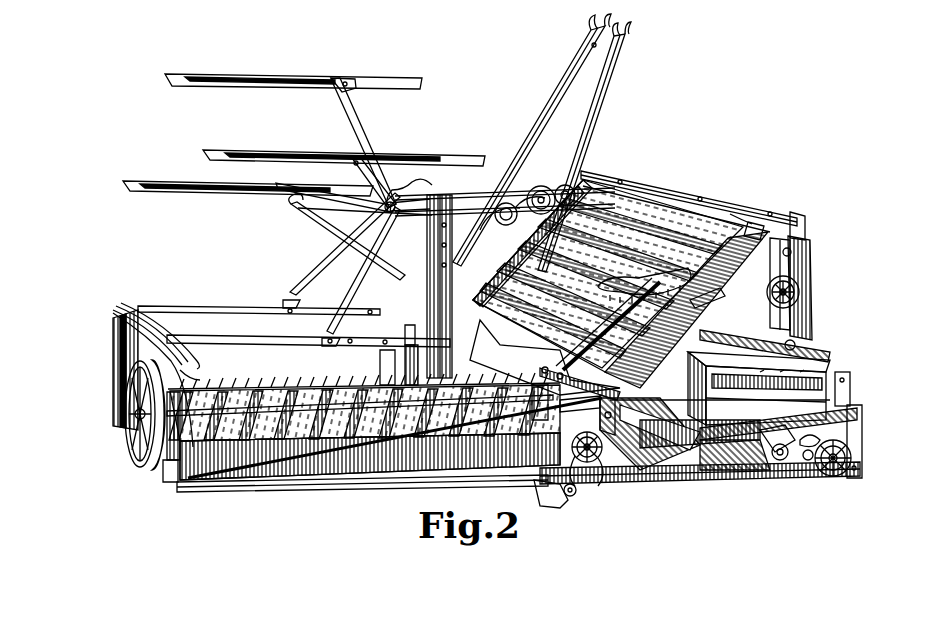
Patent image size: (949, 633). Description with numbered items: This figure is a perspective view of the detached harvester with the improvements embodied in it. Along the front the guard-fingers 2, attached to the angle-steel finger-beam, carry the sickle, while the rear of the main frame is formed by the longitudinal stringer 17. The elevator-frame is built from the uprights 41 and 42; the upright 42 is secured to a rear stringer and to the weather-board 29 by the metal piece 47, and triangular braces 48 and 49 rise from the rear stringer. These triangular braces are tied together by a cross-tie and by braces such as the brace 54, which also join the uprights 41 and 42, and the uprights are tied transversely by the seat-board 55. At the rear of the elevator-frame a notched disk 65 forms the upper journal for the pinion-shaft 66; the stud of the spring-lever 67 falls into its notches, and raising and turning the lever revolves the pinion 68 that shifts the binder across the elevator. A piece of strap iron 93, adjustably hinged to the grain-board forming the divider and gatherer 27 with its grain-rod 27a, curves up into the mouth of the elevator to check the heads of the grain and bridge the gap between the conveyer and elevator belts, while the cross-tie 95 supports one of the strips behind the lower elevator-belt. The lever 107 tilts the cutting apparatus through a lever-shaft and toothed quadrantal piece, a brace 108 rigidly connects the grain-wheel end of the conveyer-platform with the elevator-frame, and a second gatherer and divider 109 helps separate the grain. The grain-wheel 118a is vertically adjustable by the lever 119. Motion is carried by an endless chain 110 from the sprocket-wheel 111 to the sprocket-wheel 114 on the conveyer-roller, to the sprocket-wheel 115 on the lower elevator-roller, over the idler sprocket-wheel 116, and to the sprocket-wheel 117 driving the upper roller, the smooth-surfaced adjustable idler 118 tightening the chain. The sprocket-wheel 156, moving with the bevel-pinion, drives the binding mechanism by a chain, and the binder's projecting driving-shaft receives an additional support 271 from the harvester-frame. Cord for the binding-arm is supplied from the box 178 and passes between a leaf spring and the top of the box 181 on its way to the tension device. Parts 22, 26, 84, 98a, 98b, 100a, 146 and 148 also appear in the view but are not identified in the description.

The guard-fingers 2 is at (364, 376).
The longitudinal stringer 17 is at (355, 476).
The slatted platform 22 is at (364, 413).
The side wall 26 is at (141, 416).
The divider and gatherer 27 is at (149, 367).
The grain-rod 27a is at (193, 371).
The weather-board 29 is at (370, 456).
The upright 41 is at (453, 196).
The upright 42 is at (424, 378).
The metal piece 47 is at (698, 461).
The triangular brace 48 is at (795, 253).
The triangular brace 49 is at (785, 347).
The brace 54 is at (689, 201).
The seat-board 55 is at (545, 357).
The notched disk 65 is at (766, 228).
The pinion-shaft 66 is at (800, 268).
The spring-lever 67 is at (747, 224).
The pinion 68 is at (762, 346).
The elevator conveyor 84 is at (608, 276).
The strap iron 93 is at (232, 387).
The cross-tie 95 is at (555, 499).
The lower bar 98a is at (385, 312).
The bracket 98b is at (400, 365).
The bracket 100a is at (380, 388).
The lever 107 is at (542, 143).
The brace 108 is at (360, 423).
The gatherer and divider 109 is at (410, 342).
The endless chain 110 is at (686, 367).
The sprocket-wheel 111 is at (820, 478).
The sprocket-wheel 114 is at (578, 506).
The sprocket-wheel 115 is at (607, 482).
The idler sprocket-wheel 116 is at (662, 478).
The sprocket-wheel 117 is at (802, 276).
The adjustable idler 118 is at (781, 478).
The grain-wheel 118a is at (145, 421).
The lever 119 is at (130, 452).
The guide 146 is at (707, 298).
The curved guide 148 is at (644, 285).
The sprocket-wheel 156 is at (836, 478).
The box 178 is at (759, 388).
The box 181 is at (807, 352).
The additional support 271 is at (791, 425).